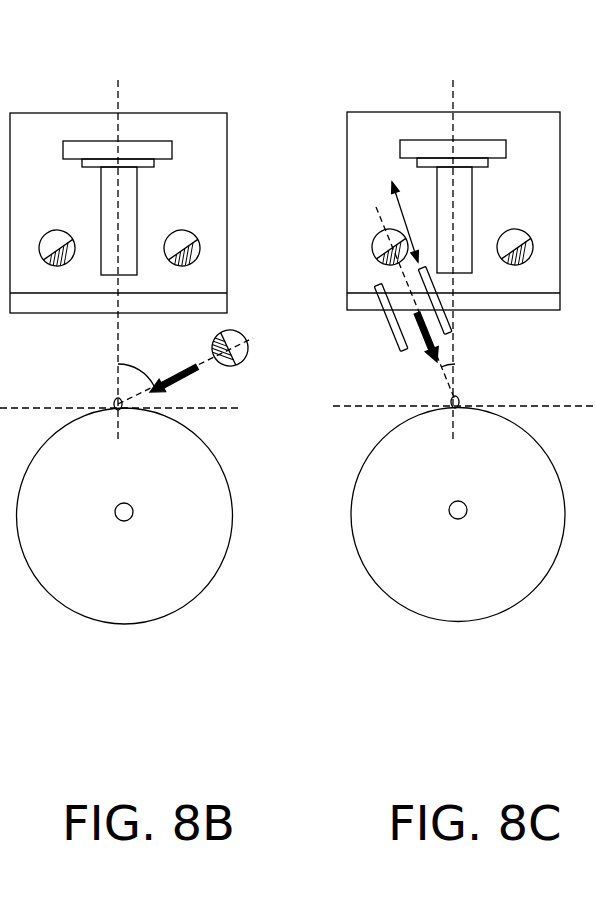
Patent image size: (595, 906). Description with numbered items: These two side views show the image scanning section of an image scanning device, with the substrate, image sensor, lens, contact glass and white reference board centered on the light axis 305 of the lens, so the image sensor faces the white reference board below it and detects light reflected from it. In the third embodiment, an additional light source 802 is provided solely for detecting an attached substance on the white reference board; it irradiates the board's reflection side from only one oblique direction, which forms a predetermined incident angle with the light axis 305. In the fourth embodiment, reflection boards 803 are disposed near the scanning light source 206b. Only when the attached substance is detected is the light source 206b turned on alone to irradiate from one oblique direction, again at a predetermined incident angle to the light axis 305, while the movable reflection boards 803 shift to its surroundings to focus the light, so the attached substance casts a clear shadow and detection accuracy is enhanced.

In FIG. 8B, the light axis 305 is at (118, 93).
In FIG. 8C, the light axis 305 is at (453, 88).
In FIG. 8B, the light source 802 is at (238, 363).
In FIG. 8C, the light source 206b is at (368, 269).
In FIG. 8C, the reflection boards 803 is at (433, 313).